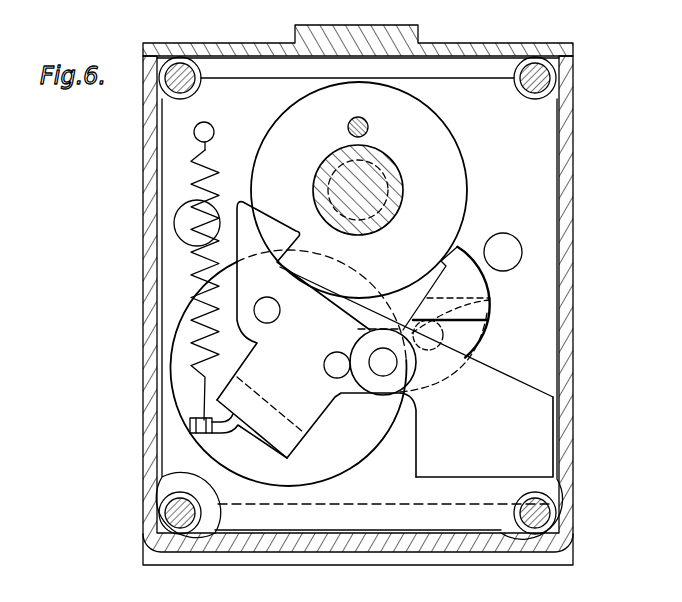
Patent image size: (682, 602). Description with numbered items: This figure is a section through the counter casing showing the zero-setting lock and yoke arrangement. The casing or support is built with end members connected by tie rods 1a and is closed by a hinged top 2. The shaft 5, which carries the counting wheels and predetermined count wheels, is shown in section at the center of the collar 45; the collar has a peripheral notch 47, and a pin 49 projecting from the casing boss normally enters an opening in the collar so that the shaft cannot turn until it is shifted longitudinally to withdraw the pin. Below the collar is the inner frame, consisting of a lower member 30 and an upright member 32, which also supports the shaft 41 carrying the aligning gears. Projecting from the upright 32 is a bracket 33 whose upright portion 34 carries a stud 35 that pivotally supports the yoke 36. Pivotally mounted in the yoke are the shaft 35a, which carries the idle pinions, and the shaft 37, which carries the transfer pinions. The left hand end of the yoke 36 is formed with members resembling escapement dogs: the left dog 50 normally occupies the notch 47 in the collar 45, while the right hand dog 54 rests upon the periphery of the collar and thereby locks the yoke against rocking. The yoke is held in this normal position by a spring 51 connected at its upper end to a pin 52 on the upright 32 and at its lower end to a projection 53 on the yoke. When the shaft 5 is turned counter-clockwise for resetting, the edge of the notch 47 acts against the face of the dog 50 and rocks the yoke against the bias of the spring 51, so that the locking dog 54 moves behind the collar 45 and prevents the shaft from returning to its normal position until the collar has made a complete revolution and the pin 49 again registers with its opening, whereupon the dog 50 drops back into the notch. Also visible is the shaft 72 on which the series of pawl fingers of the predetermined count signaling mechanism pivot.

The tie rods 1a is at (180, 77).
The hinged top 2 is at (465, 47).
The shaft 5 is at (400, 215).
The lower member 30 is at (316, 534).
The upright member 32 is at (548, 345).
The bracket 33 is at (442, 468).
The upright portion 34 is at (488, 373).
The stud 35 is at (386, 372).
The shaft 35a is at (337, 352).
The yoke 36 is at (265, 435).
The shaft 37 is at (270, 323).
The shaft 41 is at (490, 300).
The collar 45 is at (462, 163).
The peripheral notch 47 is at (268, 203).
The pin 49 is at (368, 127).
The left dog 50 is at (268, 226).
The spring 51 is at (200, 203).
The pin 52 is at (194, 131).
The projection 53 is at (190, 428).
The right hand dog 54 is at (473, 272).
The shaft 72 is at (180, 222).